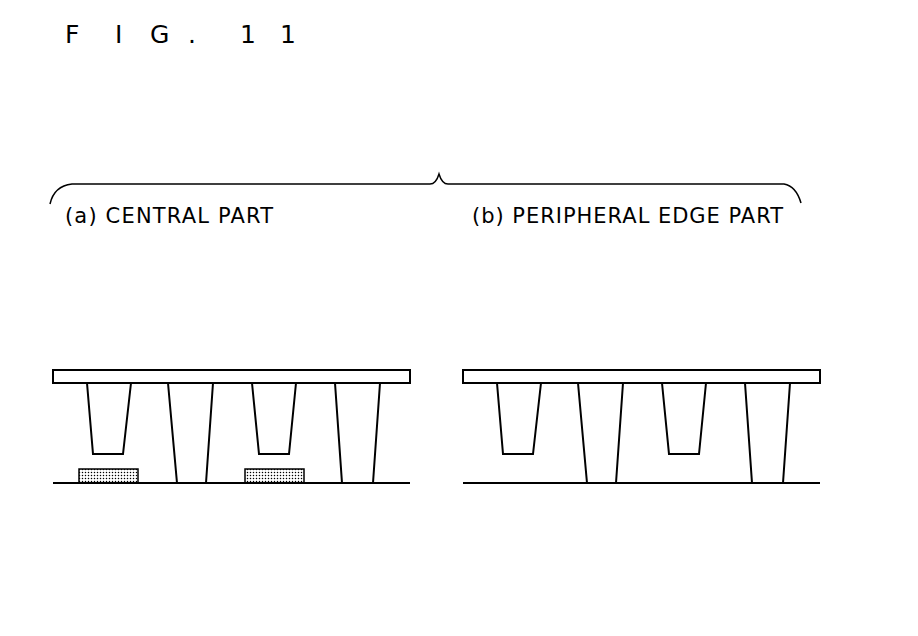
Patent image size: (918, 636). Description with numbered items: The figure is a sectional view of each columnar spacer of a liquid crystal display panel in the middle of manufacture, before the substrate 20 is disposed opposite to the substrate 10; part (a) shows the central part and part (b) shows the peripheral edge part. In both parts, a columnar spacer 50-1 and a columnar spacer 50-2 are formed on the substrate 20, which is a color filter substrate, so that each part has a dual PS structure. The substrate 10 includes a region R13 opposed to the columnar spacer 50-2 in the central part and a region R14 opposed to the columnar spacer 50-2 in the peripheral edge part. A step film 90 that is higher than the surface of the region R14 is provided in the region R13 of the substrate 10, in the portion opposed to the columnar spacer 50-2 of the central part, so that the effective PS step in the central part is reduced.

The substrate 10 is at (390, 483).
The substrate 20 is at (350, 370).
The columnar spacer 50-1 is at (192, 432).
The columnar spacer 50-2 is at (273, 403).
The step film 90 is at (306, 474).
The region R13 is at (304, 490).
The region R14 is at (714, 490).